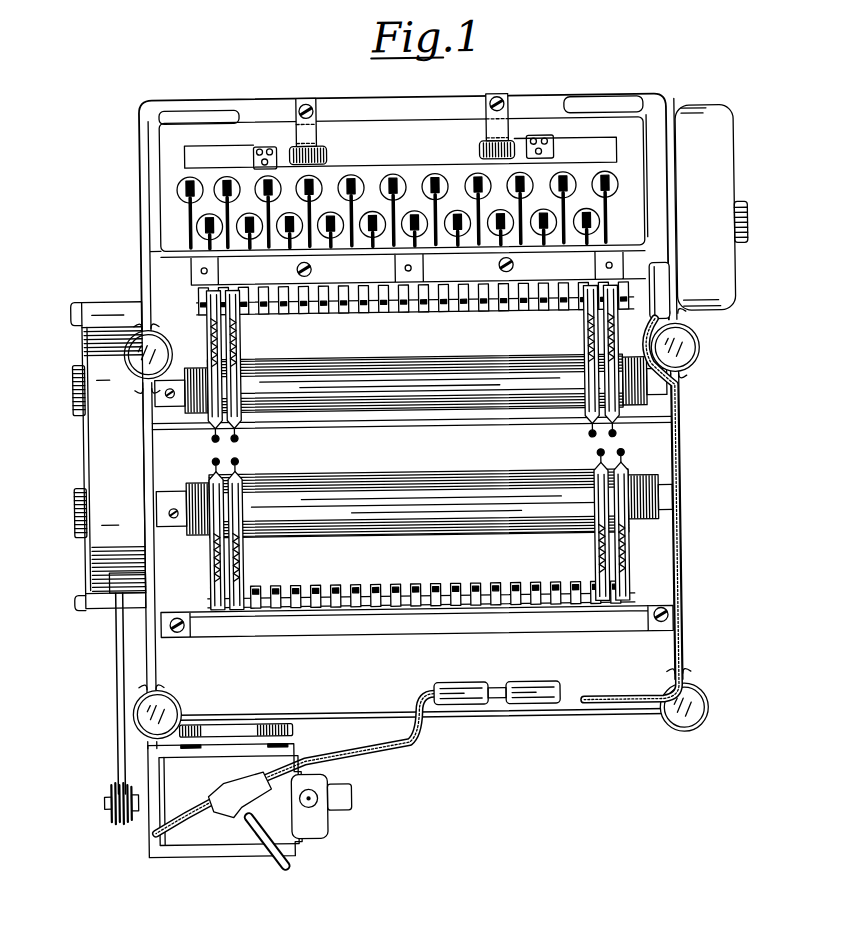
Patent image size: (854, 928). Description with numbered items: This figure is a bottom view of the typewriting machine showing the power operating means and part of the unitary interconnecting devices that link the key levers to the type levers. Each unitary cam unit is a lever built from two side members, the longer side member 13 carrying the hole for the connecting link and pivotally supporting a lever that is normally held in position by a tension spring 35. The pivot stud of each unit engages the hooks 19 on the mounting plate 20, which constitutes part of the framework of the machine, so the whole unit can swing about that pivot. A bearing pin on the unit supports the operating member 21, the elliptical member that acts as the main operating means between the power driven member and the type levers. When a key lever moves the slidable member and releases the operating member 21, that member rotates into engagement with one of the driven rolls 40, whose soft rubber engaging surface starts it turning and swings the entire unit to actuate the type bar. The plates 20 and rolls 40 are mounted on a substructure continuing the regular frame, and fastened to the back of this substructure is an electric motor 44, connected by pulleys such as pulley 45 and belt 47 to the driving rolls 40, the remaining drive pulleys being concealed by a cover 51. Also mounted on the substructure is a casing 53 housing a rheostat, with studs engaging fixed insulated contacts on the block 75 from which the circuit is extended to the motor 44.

The side member 13 is at (243, 568).
The hooks 19 is at (505, 308).
The mounting plate 20 is at (337, 272).
The operating member 21 is at (240, 498).
The tension spring 35 is at (238, 552).
The driven roll 40 is at (428, 365).
The electric motor 44 is at (188, 835).
The pulley 45 is at (106, 789).
The belt 47 is at (112, 670).
The cover 51 is at (105, 440).
The casing 53 is at (710, 182).
The block 75 is at (659, 308).